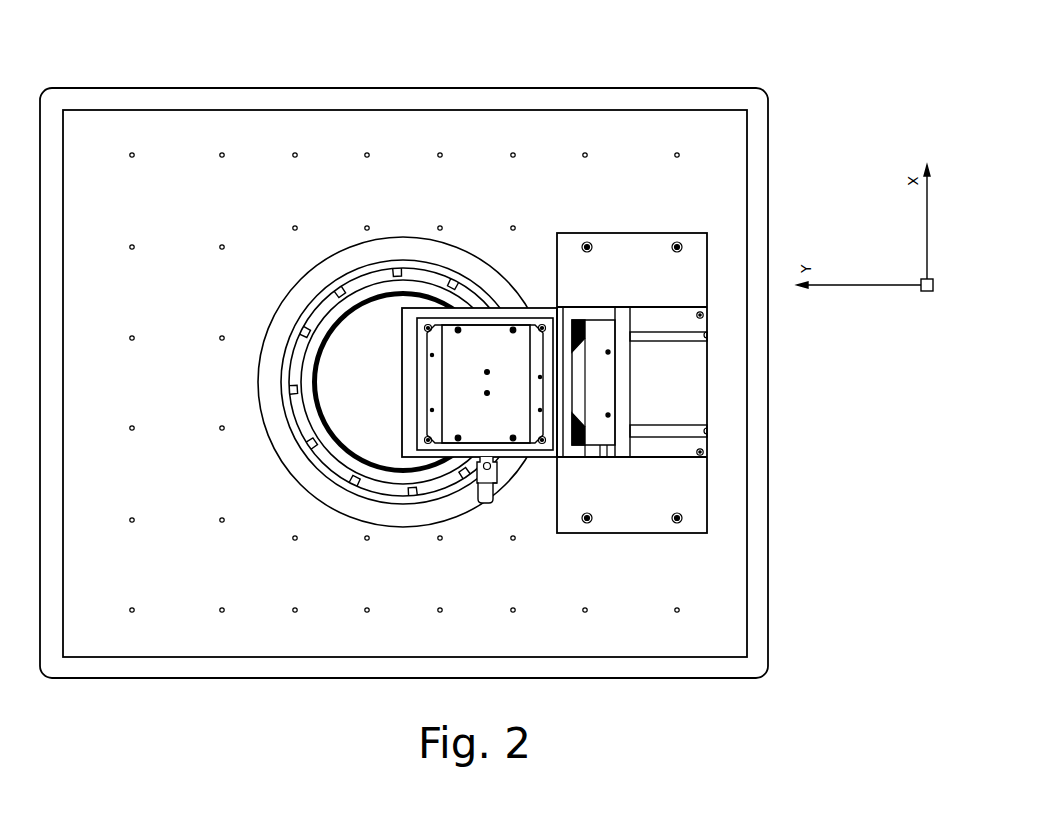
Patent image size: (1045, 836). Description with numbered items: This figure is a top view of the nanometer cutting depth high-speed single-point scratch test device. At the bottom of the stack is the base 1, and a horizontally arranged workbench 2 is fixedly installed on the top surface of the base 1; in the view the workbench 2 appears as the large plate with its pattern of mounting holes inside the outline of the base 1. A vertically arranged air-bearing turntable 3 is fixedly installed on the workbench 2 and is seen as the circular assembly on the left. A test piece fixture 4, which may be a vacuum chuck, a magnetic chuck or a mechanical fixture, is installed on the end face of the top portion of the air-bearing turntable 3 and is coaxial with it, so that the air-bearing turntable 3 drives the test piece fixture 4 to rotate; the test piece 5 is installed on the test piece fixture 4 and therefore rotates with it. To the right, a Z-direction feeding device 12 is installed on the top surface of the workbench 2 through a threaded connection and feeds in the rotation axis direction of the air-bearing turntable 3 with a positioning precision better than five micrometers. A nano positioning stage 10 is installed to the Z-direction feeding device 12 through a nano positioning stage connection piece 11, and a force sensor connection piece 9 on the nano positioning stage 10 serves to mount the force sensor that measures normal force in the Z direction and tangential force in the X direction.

The base 1 is at (47, 372).
The workbench 2 is at (131, 376).
The air-bearing turntable 3 is at (283, 355).
The test piece fixture 4 is at (323, 327).
The test piece 5 is at (355, 342).
The force sensor connection piece 9 is at (457, 368).
The nano positioning stage 10 is at (545, 308).
The nano positioning stage connection piece 11 is at (552, 315).
The Z-direction feeding device 12 is at (602, 333).